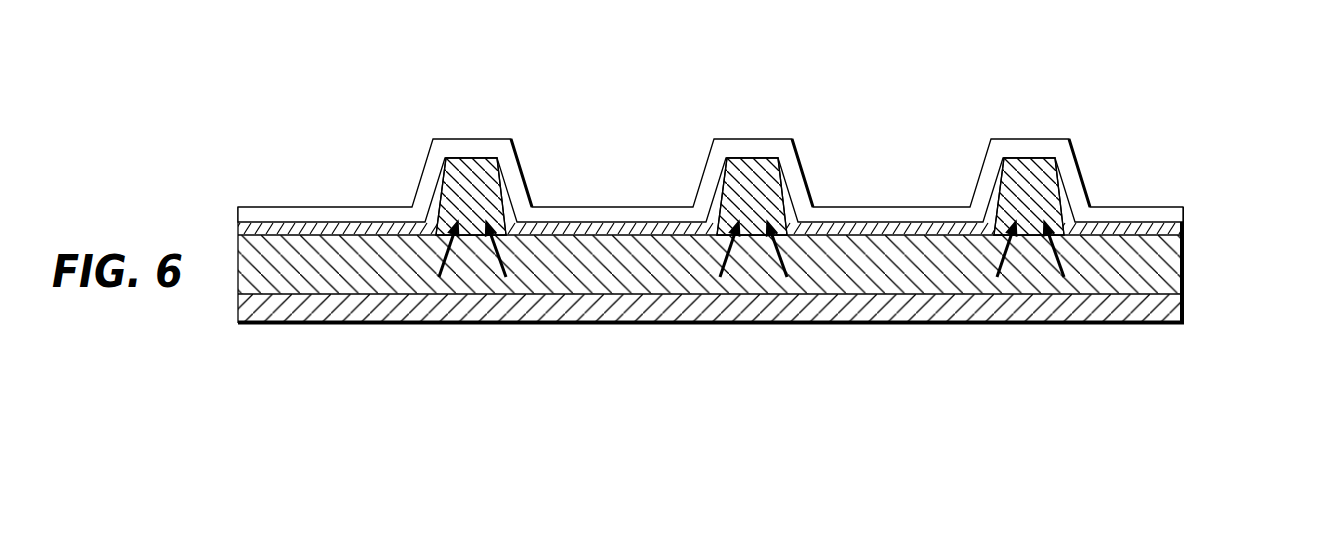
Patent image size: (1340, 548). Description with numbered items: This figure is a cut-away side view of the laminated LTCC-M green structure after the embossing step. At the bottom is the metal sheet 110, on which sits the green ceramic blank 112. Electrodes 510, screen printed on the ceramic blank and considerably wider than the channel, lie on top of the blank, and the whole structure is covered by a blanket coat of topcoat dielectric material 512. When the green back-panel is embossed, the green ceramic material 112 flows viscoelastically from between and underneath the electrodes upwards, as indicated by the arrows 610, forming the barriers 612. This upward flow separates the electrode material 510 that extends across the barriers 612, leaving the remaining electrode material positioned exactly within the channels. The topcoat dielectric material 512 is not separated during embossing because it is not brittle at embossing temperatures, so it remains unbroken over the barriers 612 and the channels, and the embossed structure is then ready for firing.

The metal sheet 110 is at (1185, 308).
The green ceramic blank 112 is at (1185, 257).
The electrodes 510 is at (1185, 223).
The topcoat dielectric material 512 is at (1113, 205).
The barriers 612 is at (483, 137).
The arrows 610 is at (496, 248).